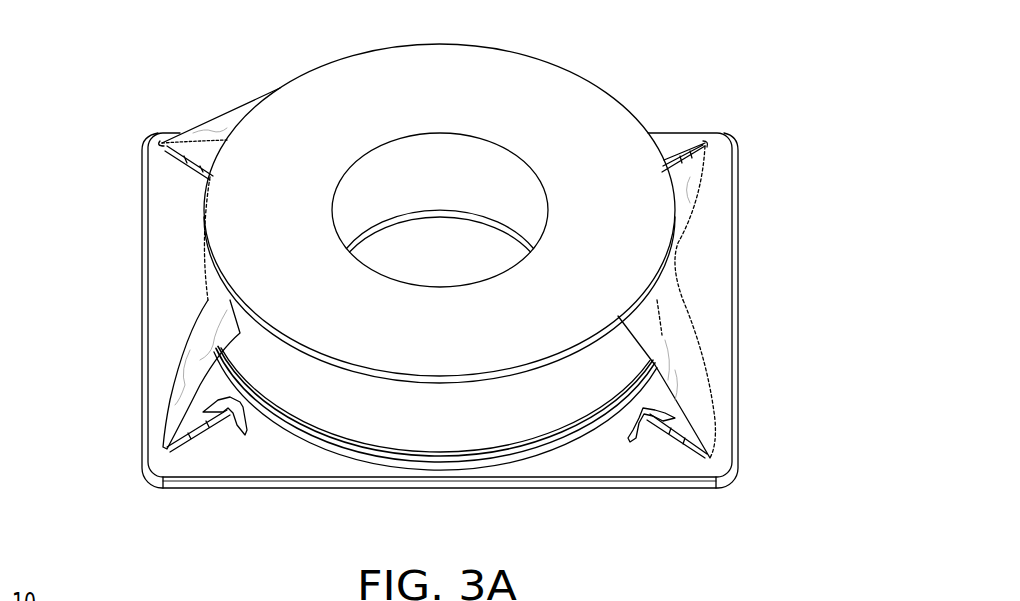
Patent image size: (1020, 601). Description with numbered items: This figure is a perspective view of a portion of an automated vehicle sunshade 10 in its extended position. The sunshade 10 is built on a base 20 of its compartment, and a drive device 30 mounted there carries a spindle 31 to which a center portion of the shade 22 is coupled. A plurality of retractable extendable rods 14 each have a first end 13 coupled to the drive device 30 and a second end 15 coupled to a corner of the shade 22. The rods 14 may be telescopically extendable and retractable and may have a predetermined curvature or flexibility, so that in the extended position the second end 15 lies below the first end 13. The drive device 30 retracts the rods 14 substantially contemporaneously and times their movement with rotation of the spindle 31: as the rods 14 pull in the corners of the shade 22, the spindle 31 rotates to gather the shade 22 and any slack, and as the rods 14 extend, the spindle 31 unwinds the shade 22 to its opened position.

The automated vehicle sunshade 10 is at (147, 57).
The first end 13 is at (230, 413).
The retractable extendable rods 14 is at (677, 438).
The second end 15 is at (167, 450).
The base 20 is at (585, 462).
The shade 22 is at (693, 360).
The drive device 30 is at (400, 462).
The spindle 31 is at (572, 112).